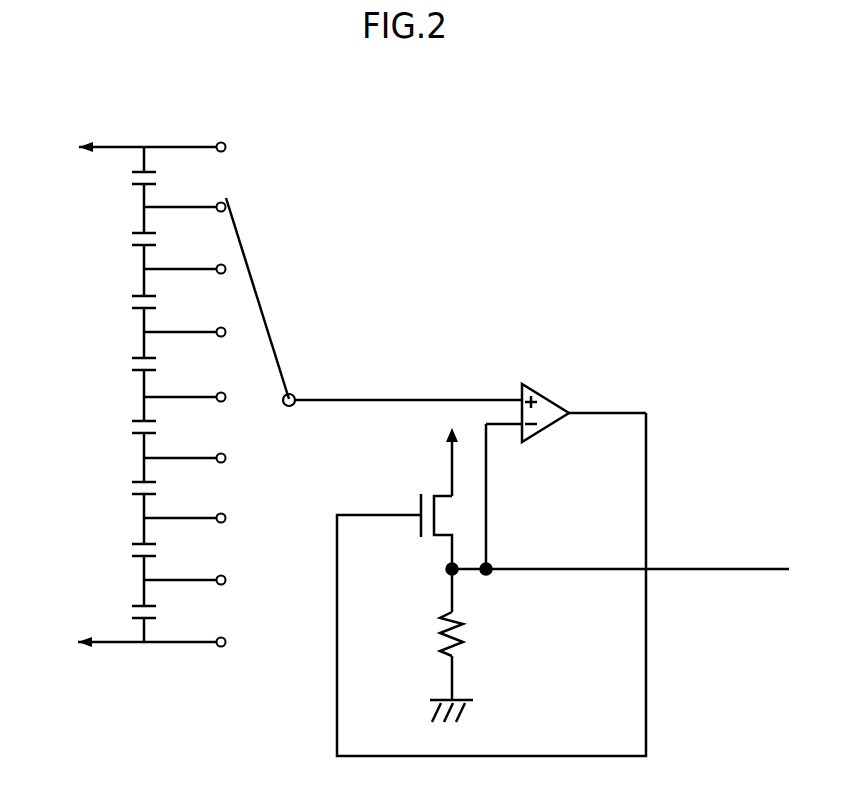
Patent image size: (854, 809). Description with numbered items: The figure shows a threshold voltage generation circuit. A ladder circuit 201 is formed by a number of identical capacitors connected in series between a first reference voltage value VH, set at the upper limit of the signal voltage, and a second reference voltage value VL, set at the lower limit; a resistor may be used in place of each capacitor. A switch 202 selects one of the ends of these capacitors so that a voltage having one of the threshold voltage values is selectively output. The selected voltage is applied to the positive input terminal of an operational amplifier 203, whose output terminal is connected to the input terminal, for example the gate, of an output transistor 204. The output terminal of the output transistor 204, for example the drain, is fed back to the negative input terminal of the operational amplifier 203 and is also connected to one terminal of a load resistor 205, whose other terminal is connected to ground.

The ladder circuit 201 is at (177, 142).
The switch 202 is at (266, 313).
The operational amplifier 203 is at (547, 391).
The output transistor 204 is at (436, 545).
The load resistor 205 is at (458, 626).